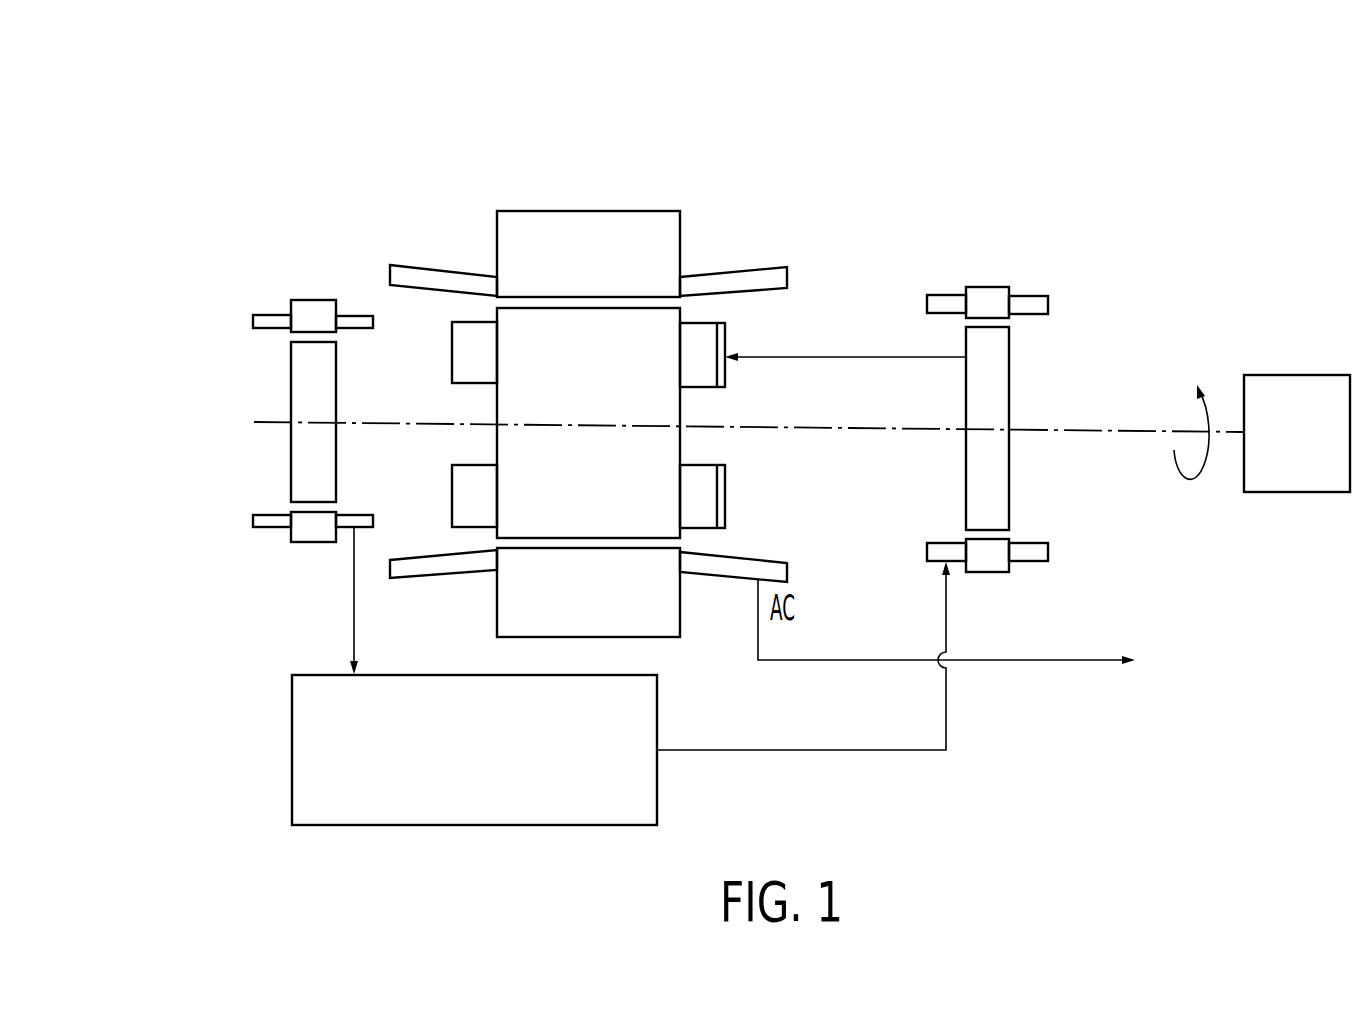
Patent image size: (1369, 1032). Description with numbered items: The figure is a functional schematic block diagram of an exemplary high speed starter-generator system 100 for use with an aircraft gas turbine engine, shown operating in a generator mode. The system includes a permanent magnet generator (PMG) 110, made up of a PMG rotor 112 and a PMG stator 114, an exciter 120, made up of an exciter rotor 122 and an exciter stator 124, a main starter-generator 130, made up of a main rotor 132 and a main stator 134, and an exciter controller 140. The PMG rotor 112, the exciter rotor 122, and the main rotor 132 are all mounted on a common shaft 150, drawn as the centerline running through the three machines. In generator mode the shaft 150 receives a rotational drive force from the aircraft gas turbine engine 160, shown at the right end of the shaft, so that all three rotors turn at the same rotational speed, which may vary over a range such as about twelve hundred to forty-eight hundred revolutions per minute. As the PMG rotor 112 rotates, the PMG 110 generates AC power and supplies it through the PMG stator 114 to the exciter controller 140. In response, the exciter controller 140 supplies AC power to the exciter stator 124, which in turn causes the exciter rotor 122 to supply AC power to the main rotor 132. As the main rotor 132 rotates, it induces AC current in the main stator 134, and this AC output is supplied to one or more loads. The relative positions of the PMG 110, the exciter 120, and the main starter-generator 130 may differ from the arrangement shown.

The starter-generator system 100 is at (874, 205).
The permanent magnet generator (PMG) 110 is at (312, 126).
The PMG rotor 112 is at (291, 453).
The PMG stator 114 is at (253, 320).
The exciter 120 is at (1024, 232).
The exciter rotor 122 is at (1009, 357).
The exciter stator 124 is at (1048, 556).
The main starter-generator 130 is at (581, 148).
The main rotor 132 is at (681, 413).
The main stator 134 is at (681, 607).
The exciter controller 140 is at (305, 670).
The common shaft 150 is at (1113, 430).
The aircraft gas turbine engine 160 is at (1297, 375).